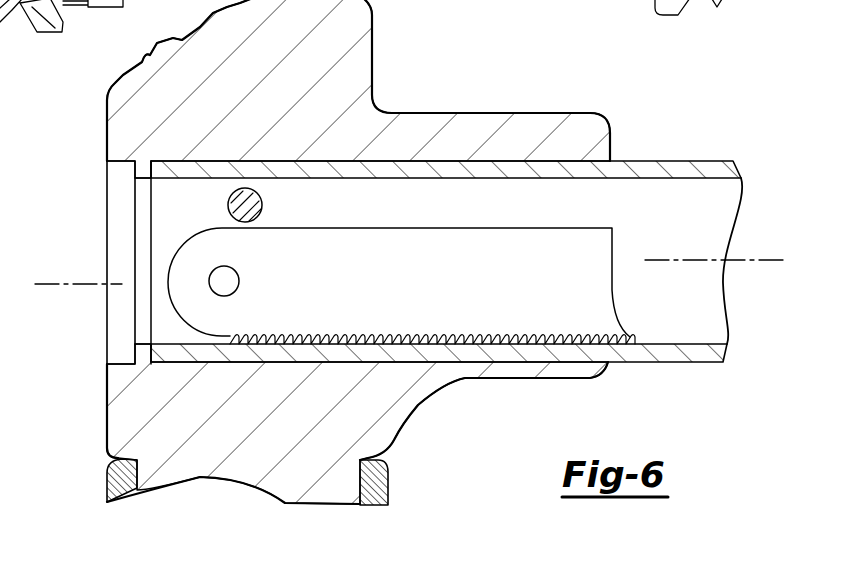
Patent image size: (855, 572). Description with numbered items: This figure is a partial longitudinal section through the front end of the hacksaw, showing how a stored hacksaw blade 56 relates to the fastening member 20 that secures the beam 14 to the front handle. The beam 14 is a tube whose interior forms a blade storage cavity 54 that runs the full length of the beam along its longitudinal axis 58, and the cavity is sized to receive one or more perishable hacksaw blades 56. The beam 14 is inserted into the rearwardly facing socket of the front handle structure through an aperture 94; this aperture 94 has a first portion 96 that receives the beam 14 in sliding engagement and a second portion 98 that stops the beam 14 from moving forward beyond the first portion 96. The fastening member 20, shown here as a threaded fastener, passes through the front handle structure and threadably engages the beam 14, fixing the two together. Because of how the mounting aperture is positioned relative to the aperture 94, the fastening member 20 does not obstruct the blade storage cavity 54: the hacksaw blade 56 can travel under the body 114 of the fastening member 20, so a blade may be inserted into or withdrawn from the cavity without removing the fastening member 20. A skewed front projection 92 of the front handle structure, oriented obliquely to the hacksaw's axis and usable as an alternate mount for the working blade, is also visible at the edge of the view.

The beam 14 is at (607, 172).
The fastening member 20 is at (266, 207).
The blade storage cavity 54 is at (727, 208).
The hacksaw blade 56 is at (463, 238).
The longitudinal axis 58 is at (767, 262).
The skewed front projection 92 is at (750, 0).
The aperture 94 is at (442, 161).
The first portion 96 is at (170, 161).
The second portion 98 is at (142, 245).
The body 114 is at (229, 208).